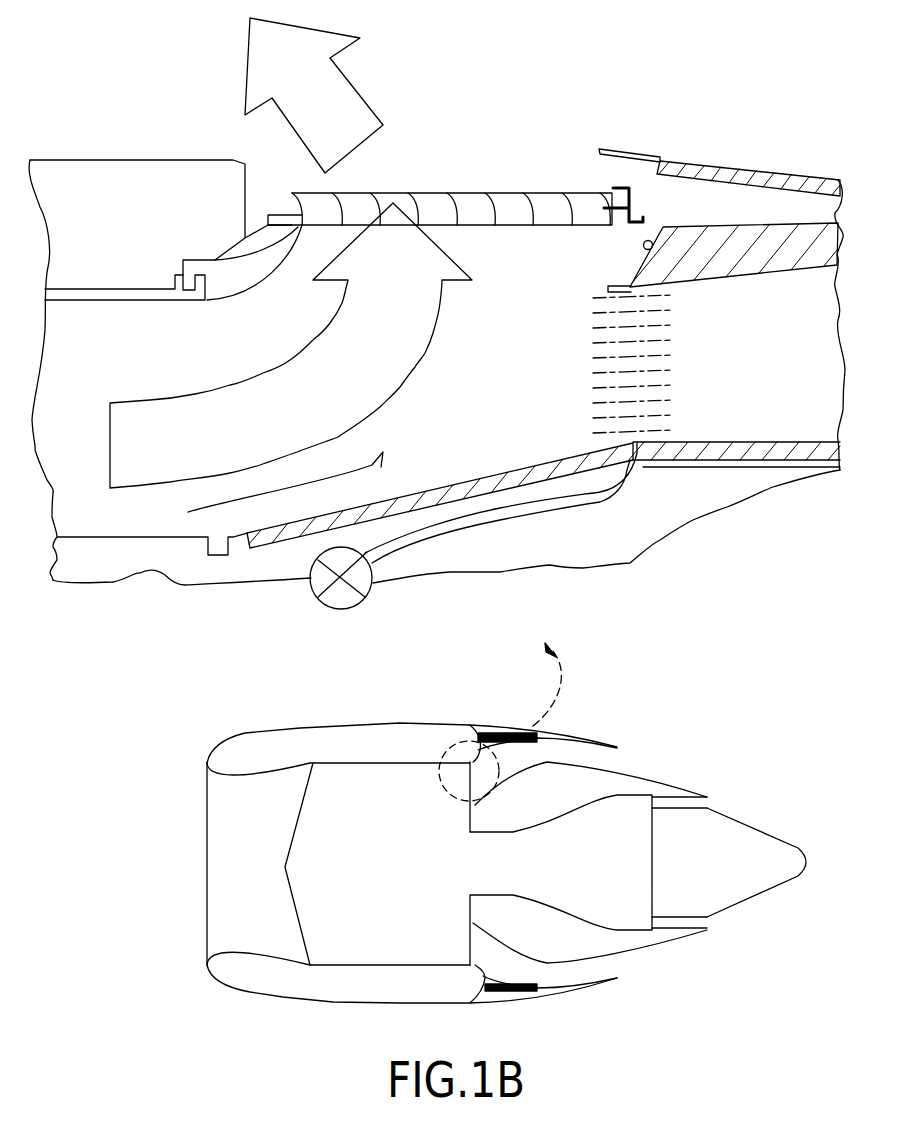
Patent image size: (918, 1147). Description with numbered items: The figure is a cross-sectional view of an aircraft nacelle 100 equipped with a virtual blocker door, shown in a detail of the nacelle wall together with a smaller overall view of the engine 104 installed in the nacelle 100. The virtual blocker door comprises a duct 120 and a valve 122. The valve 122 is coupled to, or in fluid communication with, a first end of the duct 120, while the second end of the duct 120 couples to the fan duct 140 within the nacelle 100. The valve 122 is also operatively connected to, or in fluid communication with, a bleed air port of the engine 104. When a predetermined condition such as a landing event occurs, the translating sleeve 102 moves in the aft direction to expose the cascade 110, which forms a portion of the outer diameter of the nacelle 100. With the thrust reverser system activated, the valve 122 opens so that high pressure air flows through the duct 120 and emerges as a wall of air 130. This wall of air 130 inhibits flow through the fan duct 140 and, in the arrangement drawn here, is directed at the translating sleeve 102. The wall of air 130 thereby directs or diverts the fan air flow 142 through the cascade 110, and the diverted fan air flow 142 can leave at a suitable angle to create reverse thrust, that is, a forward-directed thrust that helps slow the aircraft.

The aircraft nacelle 100 is at (207, 763).
The translating sleeve 102 is at (742, 168).
The engine 104 is at (613, 903).
The cascade 110 is at (267, 168).
The duct 120 is at (493, 520).
The valve 122 is at (358, 578).
The wall of air 130 is at (657, 367).
The fan duct 140 is at (266, 489).
The fan air flow 142 is at (110, 443).